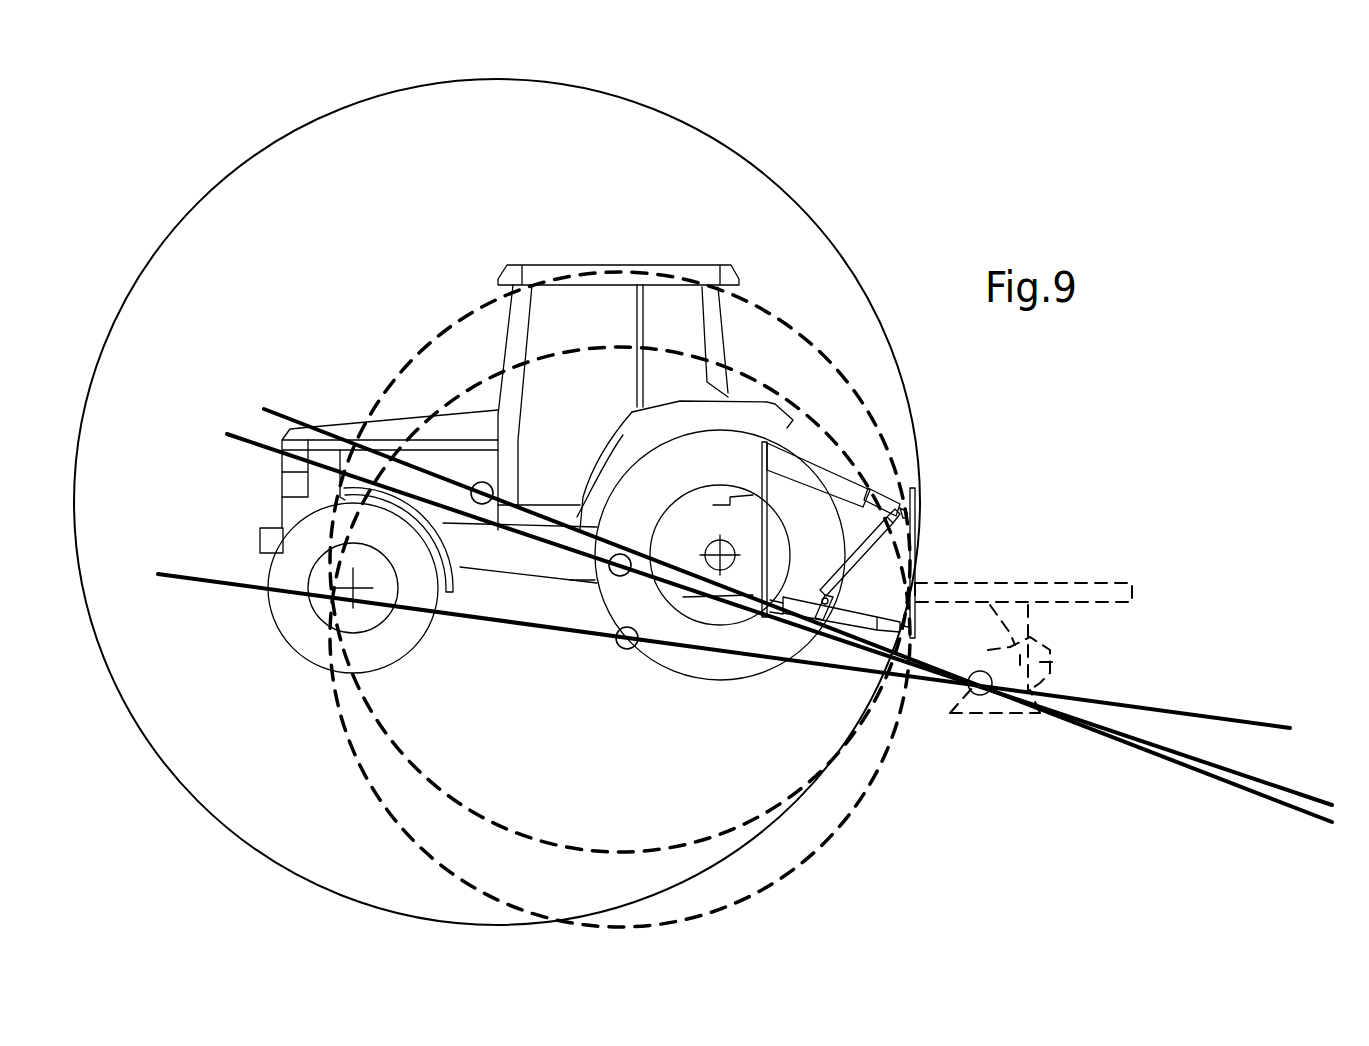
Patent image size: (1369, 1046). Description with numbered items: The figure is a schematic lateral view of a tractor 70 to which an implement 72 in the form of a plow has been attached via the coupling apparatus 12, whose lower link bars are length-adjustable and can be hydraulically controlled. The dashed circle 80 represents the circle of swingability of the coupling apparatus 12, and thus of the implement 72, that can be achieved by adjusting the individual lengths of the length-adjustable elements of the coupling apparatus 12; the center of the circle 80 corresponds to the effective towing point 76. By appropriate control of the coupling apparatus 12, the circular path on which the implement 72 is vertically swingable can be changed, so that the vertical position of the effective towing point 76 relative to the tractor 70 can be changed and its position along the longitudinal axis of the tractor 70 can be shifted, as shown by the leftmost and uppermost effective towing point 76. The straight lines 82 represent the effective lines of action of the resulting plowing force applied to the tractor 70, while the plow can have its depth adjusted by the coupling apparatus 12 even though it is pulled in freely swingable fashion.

The circle 80 is at (829, 237).
The tractor 70 is at (340, 425).
The coupling apparatus 12 is at (948, 491).
The implement 72 is at (1045, 590).
The effective towing point 76 is at (492, 518).
The straight lines 82 is at (1156, 724).